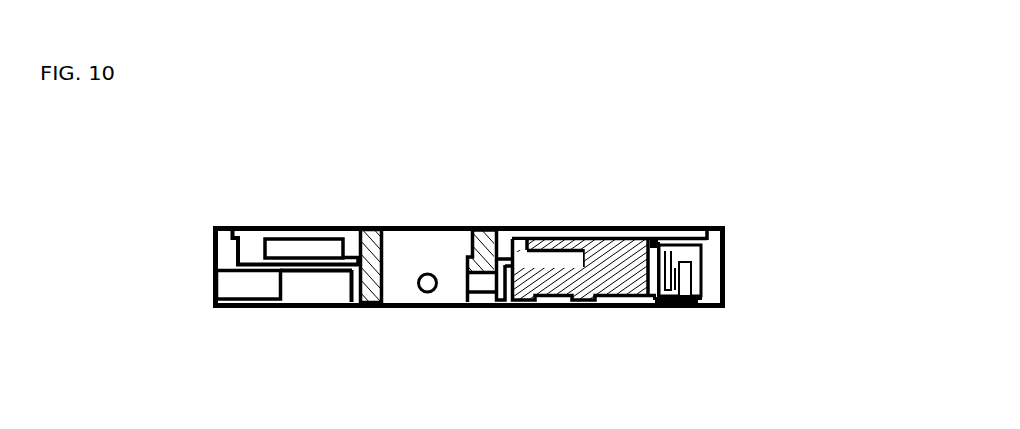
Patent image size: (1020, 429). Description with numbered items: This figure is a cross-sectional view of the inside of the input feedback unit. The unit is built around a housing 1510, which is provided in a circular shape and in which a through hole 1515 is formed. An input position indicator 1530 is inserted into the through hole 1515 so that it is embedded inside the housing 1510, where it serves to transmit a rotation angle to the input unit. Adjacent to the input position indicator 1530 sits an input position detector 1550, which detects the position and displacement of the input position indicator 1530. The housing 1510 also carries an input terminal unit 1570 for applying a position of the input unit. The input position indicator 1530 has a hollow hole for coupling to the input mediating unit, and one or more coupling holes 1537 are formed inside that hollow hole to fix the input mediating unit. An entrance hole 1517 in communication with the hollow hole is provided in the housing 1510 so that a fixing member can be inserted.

The housing 1510 is at (712, 252).
The through hole 1515 is at (370, 228).
The entrance hole 1517 is at (225, 282).
The input position indicator 1530 is at (485, 229).
The coupling hole 1537 is at (383, 277).
The input position detector 1550 is at (622, 240).
The input terminal unit 1570 is at (673, 308).